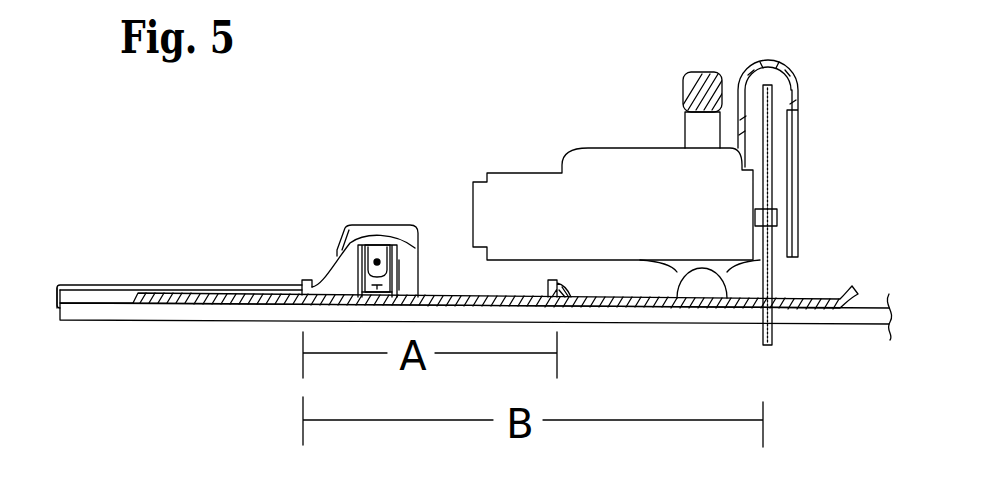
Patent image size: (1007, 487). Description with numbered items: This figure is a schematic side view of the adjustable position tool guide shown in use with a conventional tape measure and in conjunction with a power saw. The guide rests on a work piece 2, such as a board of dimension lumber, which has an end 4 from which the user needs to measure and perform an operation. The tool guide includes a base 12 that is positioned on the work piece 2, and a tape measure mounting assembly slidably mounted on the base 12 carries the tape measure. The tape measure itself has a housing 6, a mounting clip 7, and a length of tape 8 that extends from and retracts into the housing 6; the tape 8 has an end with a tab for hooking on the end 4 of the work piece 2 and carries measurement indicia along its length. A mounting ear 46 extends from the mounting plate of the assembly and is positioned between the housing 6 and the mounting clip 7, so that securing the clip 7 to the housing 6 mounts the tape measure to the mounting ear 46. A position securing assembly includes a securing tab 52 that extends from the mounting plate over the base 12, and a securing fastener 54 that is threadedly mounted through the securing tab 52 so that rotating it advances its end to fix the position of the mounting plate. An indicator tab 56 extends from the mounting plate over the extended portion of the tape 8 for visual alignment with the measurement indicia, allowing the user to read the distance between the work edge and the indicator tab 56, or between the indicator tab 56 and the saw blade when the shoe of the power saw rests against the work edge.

The work piece 2 is at (200, 313).
The end of the work piece 4 is at (58, 312).
The housing 6 is at (357, 232).
The mounting clip 7 is at (378, 250).
The tape 8 is at (100, 283).
The base 12 is at (180, 293).
The mounting ear 46 is at (405, 253).
The securing tab 52 is at (390, 287).
The securing fastener 54 is at (307, 279).
The indicator tab 56 is at (342, 268).